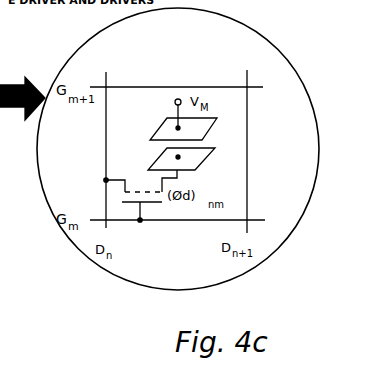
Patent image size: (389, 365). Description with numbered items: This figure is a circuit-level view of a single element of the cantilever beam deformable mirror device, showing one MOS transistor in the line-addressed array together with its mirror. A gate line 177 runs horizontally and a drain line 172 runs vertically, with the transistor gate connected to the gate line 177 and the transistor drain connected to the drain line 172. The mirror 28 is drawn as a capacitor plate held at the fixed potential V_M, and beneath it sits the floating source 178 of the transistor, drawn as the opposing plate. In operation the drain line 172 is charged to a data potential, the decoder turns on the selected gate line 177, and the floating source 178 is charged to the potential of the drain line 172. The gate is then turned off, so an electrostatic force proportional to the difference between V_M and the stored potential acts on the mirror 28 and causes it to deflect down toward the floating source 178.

The gate line 177 is at (215, 87).
The drain line 172 is at (105, 145).
The mirror 28 is at (217, 118).
The floating source 178 is at (205, 163).